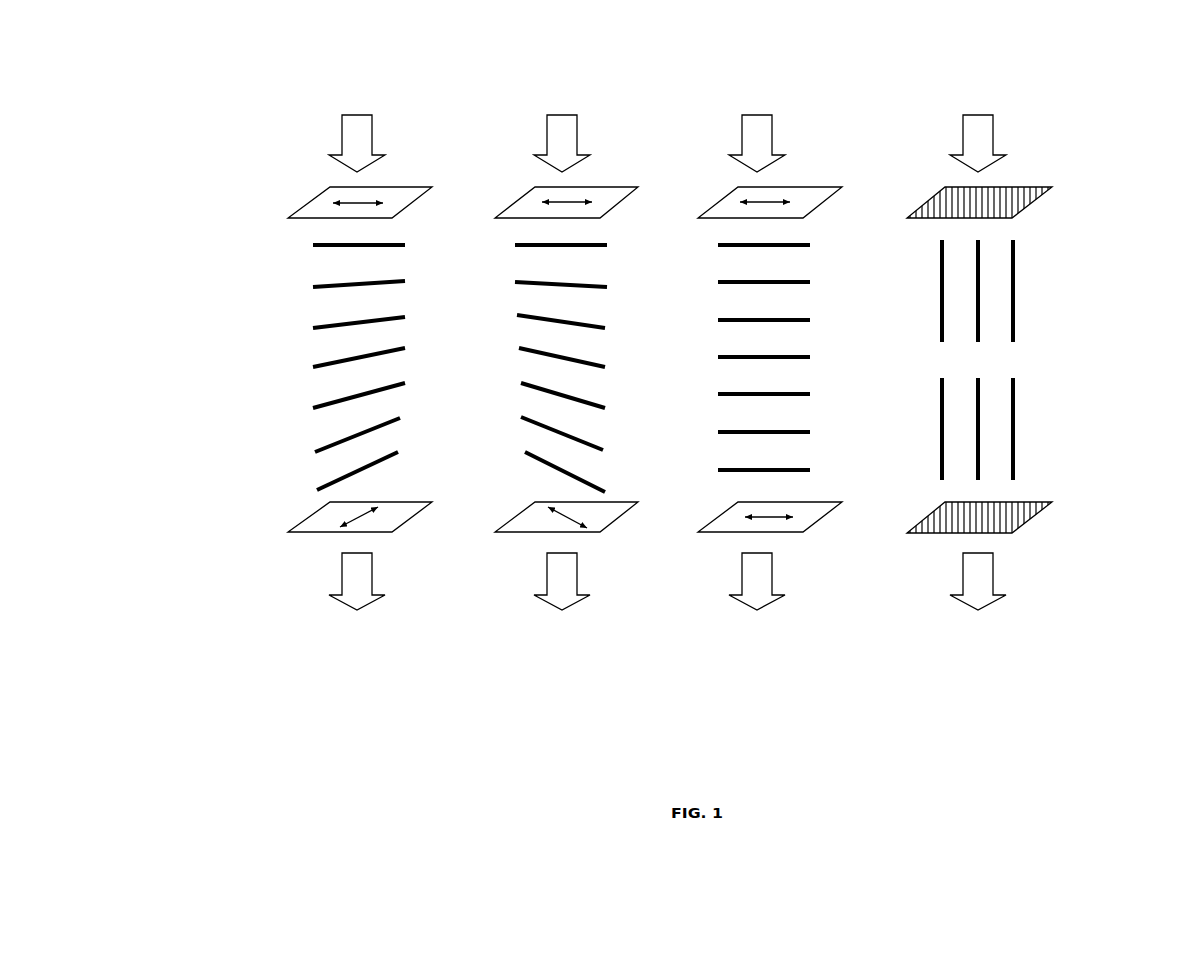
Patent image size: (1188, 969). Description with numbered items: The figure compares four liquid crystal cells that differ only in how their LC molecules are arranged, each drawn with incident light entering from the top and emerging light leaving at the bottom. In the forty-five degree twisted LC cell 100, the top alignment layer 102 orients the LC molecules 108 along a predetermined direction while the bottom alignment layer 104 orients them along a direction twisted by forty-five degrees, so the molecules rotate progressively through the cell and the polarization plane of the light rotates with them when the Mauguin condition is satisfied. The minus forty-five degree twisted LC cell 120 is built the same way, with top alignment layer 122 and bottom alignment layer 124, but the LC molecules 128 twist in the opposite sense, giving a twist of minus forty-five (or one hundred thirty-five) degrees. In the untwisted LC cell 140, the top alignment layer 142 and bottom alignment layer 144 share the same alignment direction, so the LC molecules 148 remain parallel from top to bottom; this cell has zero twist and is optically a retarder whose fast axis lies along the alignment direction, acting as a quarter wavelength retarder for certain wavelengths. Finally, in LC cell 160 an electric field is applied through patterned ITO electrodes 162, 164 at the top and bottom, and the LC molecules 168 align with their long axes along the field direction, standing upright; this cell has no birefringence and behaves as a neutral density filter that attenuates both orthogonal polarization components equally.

The 45° twisted LC cell 100 is at (378, 55).
The alignment layer 102 is at (295, 203).
The alignment layer 104 is at (295, 521).
The LC molecule 108 is at (320, 362).
The –45° twisted LC cell 120 is at (566, 55).
The alignment layer 122 is at (615, 182).
The alignment layer 124 is at (615, 497).
The LC molecule 128 is at (518, 378).
The untwisted LC cell 140 is at (758, 55).
The alignment layer 142 is at (812, 182).
The alignment layer 144 is at (812, 497).
The LC molecule 148 is at (727, 387).
The LC cell 160 is at (978, 55).
The ITO electrode 162 is at (1022, 182).
The ITO electrode 164 is at (1035, 498).
The LC molecule 168 is at (935, 378).